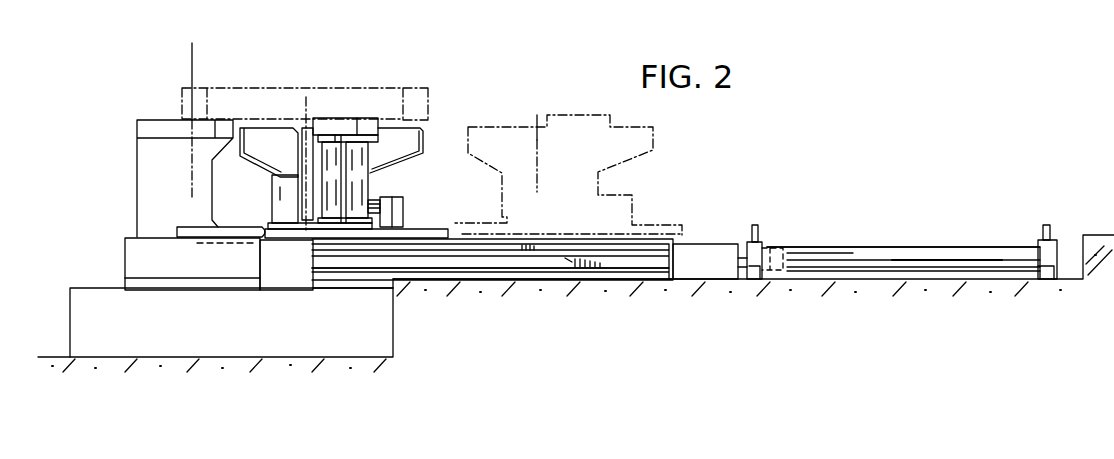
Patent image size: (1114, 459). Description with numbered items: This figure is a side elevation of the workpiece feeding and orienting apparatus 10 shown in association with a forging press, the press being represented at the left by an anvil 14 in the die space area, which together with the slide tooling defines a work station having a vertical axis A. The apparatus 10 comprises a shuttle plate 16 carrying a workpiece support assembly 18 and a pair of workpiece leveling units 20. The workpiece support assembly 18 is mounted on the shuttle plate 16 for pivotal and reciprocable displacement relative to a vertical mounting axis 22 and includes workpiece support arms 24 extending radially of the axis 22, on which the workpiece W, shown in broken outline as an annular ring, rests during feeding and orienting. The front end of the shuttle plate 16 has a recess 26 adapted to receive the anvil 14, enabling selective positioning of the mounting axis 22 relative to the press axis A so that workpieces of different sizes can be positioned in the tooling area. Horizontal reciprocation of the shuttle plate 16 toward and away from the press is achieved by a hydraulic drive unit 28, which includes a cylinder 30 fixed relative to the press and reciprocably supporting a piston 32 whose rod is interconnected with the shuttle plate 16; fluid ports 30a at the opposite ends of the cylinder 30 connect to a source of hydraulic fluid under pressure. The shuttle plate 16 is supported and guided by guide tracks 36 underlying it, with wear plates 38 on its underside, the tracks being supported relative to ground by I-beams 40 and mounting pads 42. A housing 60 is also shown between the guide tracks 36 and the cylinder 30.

The workpiece feeding and orienting apparatus 10 is at (472, 90).
The anvil 14 is at (150, 120).
The shuttle plate 16 is at (435, 228).
The workpiece support assembly 18 is at (288, 121).
The workpiece leveling units 20 is at (358, 118).
The vertical mounting axis 22 is at (303, 100).
The workpiece support arms 24 is at (260, 153).
The recess 26 is at (247, 233).
The hydraulic drive unit 28 is at (860, 242).
The cylinder 30 is at (903, 250).
The fluid ports 30a is at (757, 226).
The piston 32 is at (787, 248).
The guide tracks 36 is at (555, 240).
The wear plates 38 is at (278, 241).
The I-beams 40 is at (578, 262).
The mounting pads 42 is at (503, 279).
The drive housing 60 is at (708, 253).
The vertical axis A is at (191, 55).
The workpiece W is at (178, 100).